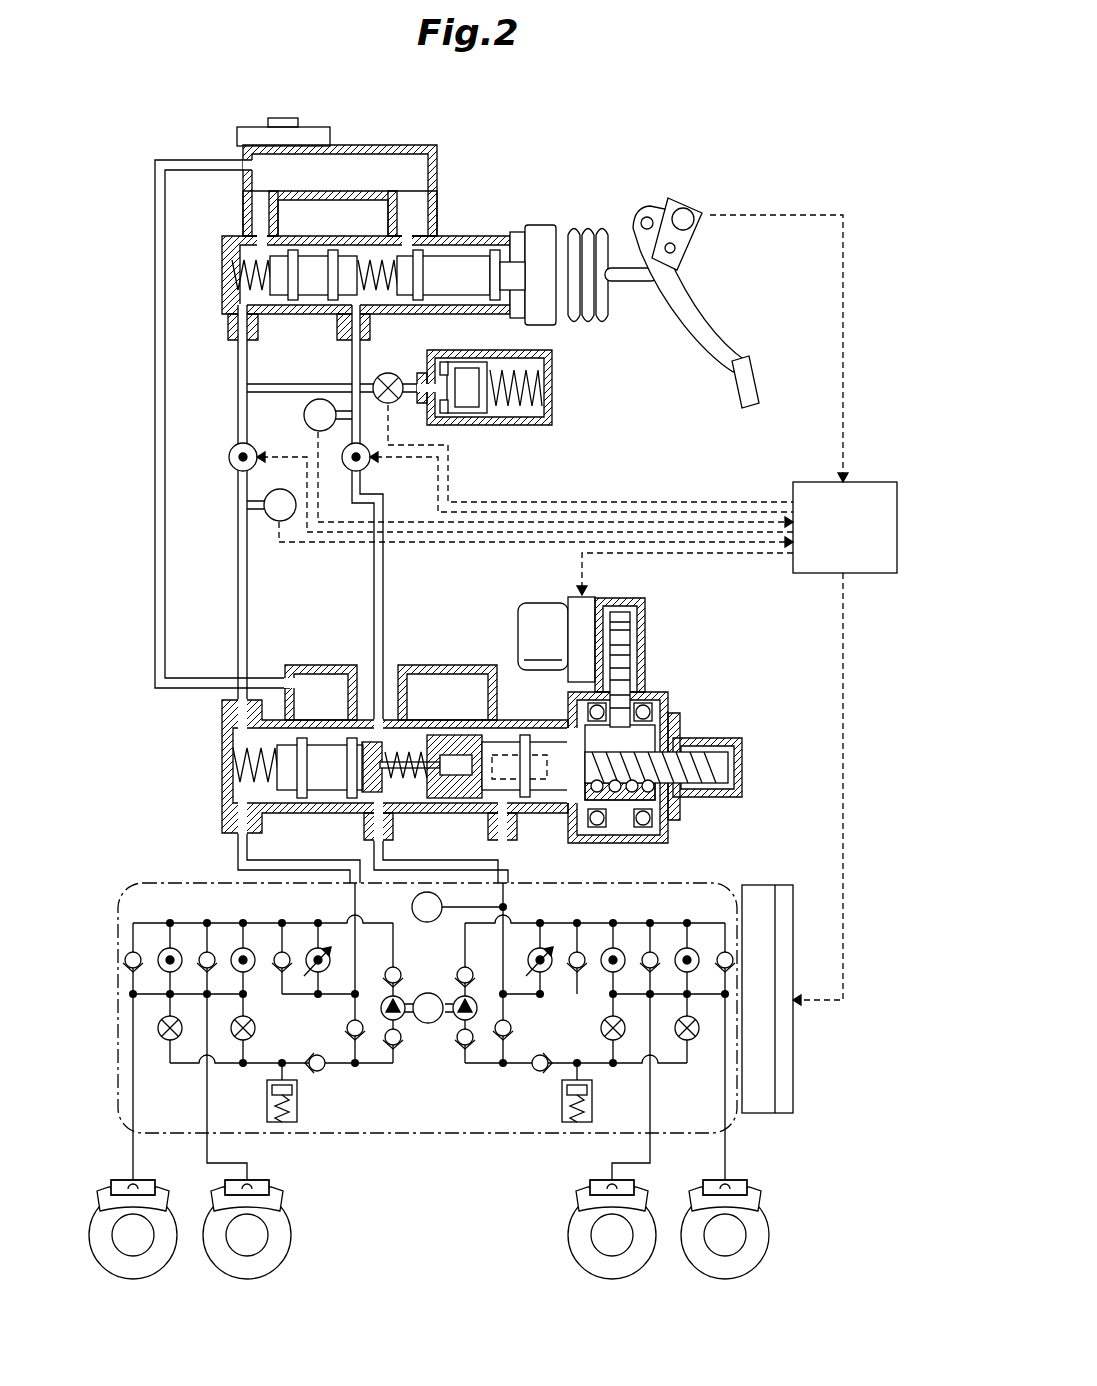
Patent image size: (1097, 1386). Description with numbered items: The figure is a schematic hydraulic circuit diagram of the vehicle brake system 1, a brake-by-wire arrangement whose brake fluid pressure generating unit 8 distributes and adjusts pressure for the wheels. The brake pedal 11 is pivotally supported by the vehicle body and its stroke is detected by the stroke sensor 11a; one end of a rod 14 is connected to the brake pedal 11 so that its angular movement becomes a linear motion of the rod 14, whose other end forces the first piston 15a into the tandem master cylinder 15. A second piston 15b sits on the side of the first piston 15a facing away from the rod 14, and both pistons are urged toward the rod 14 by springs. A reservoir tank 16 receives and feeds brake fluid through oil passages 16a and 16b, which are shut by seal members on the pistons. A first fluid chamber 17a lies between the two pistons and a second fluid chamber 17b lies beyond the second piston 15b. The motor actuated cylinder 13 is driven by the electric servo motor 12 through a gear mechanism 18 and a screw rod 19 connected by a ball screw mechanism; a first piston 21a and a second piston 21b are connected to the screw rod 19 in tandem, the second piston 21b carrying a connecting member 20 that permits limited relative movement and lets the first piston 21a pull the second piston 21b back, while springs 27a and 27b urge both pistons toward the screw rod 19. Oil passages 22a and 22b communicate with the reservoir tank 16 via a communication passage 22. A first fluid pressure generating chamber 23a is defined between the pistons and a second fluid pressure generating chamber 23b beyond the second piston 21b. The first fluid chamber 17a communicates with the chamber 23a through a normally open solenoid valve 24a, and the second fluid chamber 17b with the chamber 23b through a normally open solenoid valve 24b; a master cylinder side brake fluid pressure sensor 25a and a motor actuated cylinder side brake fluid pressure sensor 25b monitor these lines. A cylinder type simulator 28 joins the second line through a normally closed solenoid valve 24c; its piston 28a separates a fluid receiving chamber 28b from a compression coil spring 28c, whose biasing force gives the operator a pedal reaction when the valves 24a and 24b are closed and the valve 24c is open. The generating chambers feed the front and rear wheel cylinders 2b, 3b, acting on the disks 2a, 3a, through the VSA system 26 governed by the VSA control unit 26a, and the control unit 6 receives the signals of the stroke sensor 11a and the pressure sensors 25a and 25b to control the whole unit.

The brake system 1 is at (152, 72).
The disk 2a is at (176, 1227).
The wheel cylinder 2b is at (146, 1180).
The disk 3a is at (570, 1222).
The wheel cylinder 3b is at (598, 1180).
The control unit 6 is at (878, 482).
The brake fluid pressure generating unit 8 is at (585, 143).
The brake pedal 11 is at (688, 316).
The stroke sensor 11a is at (690, 200).
The electric servo motor 12 is at (546, 612).
The motor actuated cylinder 13 is at (714, 672).
The rod 14 is at (617, 268).
The master cylinder 15 is at (492, 231).
The first piston 15a is at (456, 262).
The second piston 15b is at (309, 290).
The reservoir tank 16 is at (345, 145).
The oil passage 16a is at (397, 245).
The oil passage 16b is at (268, 205).
The first fluid chamber 17a is at (369, 252).
The second fluid chamber 17b is at (246, 250).
The gear mechanism 18 is at (648, 619).
The screw rod 19 is at (703, 777).
The connecting member 20 is at (403, 768).
The first piston 21a is at (494, 786).
The second piston 21b is at (326, 786).
The communication passage 22 is at (157, 330).
The oil passage 22a is at (464, 710).
The oil passage 22b is at (303, 710).
The first fluid pressure generating chamber 23a is at (418, 737).
The second fluid pressure generating chamber 23b is at (240, 738).
The normally open solenoid valve 24a is at (369, 463).
The normally open solenoid valve 24b is at (232, 464).
The normally closed solenoid valve 24c is at (391, 373).
The master cylinder side brake fluid pressure sensor 25a is at (304, 415).
The motor actuated cylinder side brake fluid pressure sensor 25b is at (279, 522).
The VSA system 26 is at (195, 883).
The VSA control unit 26a is at (766, 885).
The spring 27a is at (409, 784).
The spring 27b is at (240, 780).
The simulator 28 is at (553, 390).
The piston 28a is at (463, 378).
The fluid receiving chamber 28b is at (444, 412).
The compression coil spring 28c is at (522, 430).